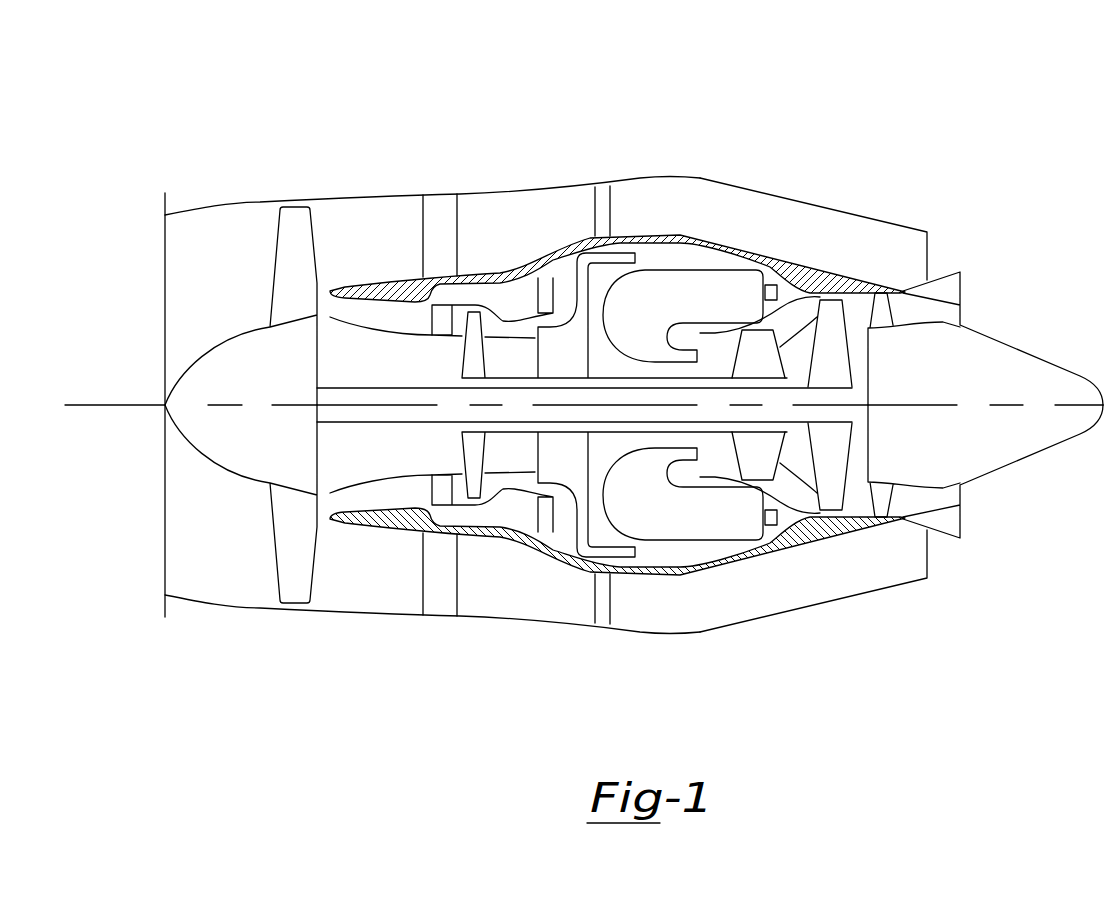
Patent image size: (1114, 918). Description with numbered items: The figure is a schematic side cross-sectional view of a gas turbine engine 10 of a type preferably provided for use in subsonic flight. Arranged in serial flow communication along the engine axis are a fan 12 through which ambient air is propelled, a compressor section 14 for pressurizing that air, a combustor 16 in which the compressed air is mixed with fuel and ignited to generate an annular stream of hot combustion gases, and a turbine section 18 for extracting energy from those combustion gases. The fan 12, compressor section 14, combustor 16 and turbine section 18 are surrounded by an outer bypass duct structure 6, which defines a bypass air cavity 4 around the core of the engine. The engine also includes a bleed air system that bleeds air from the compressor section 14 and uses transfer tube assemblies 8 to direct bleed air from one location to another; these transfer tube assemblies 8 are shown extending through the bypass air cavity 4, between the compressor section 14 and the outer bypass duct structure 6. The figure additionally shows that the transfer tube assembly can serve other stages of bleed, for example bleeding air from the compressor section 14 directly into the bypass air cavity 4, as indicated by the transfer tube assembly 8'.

The bypass air cavity 4 is at (681, 195).
The outer bypass duct structure 6 is at (870, 217).
The transfer tube assembly 8 is at (516, 422).
The transfer tube assembly 8' is at (492, 335).
The gas turbine engine 10 is at (810, 138).
The fan 12 is at (290, 533).
The compressor section 14 is at (503, 322).
The combustor 16 is at (685, 287).
The turbine section 18 is at (790, 457).